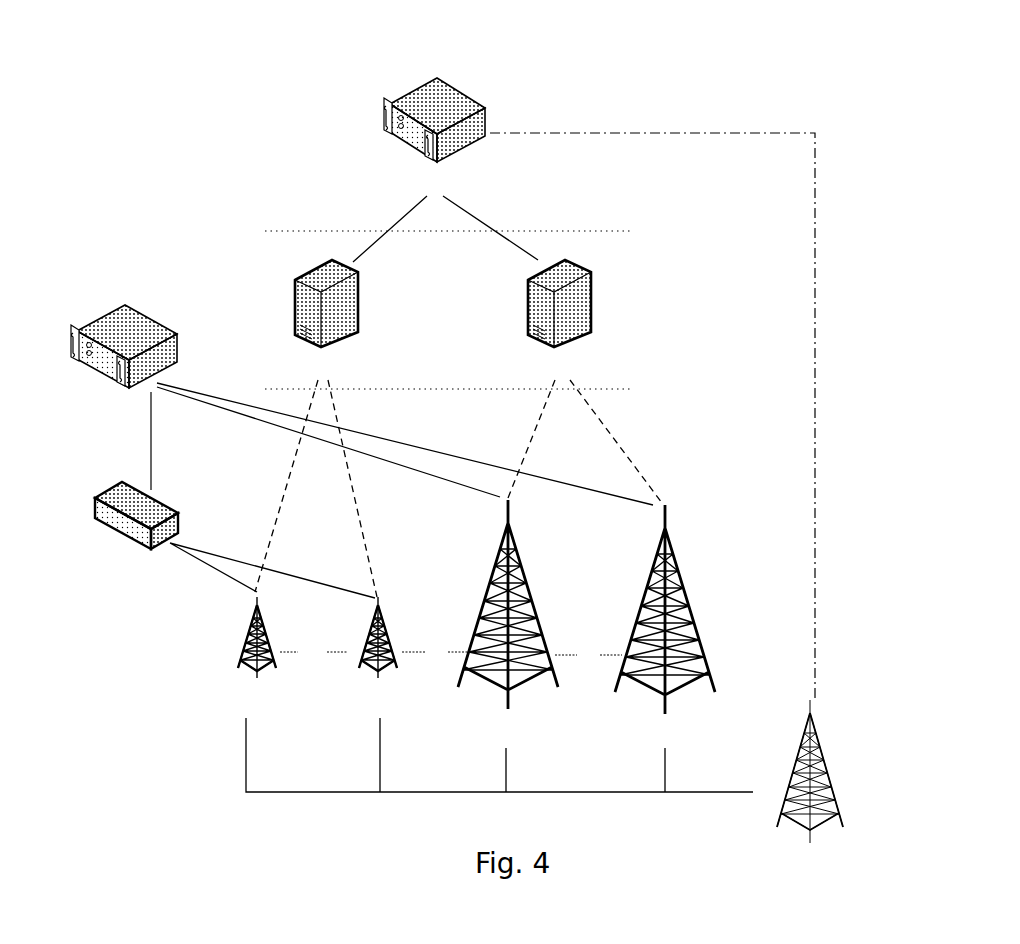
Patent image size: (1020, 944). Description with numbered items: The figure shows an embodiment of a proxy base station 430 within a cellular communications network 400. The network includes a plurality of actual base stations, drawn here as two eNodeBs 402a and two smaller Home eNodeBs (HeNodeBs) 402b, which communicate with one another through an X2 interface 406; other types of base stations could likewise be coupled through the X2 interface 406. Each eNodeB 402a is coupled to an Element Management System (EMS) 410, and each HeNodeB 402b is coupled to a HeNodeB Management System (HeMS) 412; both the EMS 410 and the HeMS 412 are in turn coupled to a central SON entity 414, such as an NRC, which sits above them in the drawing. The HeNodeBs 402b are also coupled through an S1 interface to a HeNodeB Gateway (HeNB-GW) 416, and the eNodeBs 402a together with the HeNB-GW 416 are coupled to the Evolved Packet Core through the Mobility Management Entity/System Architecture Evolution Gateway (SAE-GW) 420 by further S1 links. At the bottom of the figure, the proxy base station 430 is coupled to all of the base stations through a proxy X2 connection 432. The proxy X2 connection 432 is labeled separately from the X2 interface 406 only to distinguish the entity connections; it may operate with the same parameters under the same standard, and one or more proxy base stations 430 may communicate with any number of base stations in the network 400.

The cellular communications network 400 is at (311, 40).
The central SON entity 414 is at (412, 94).
The HeNodeB Management System (HeMS) 412 is at (305, 283).
The Element Management System (EMS) 410 is at (537, 283).
The Mobility Management Entity/System Architecture Evolution Gateway (SAE-GW) 420 is at (110, 316).
The HeNodeB Gateway (HeNB-GW) 416 is at (120, 537).
The Home eNodeBs (HeNodeBs) 402b is at (369, 632).
The eNodeBs 402a is at (482, 630).
The X2 interface 406 is at (298, 654).
The proxy X2 connection 432 is at (258, 793).
The proxy base station 430 is at (825, 780).